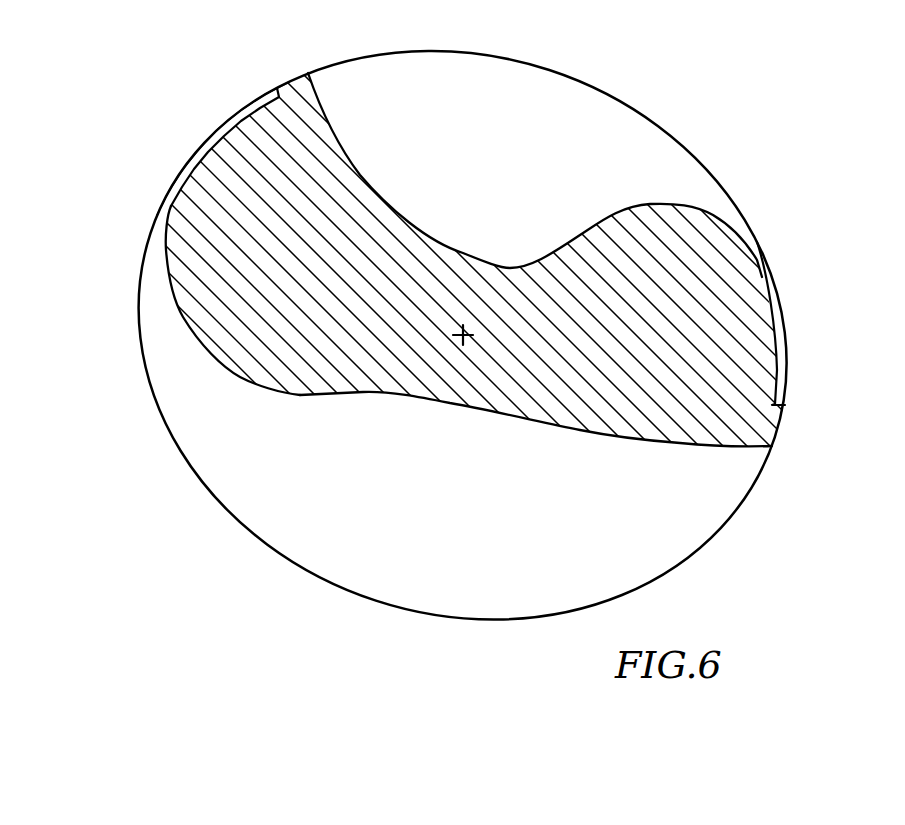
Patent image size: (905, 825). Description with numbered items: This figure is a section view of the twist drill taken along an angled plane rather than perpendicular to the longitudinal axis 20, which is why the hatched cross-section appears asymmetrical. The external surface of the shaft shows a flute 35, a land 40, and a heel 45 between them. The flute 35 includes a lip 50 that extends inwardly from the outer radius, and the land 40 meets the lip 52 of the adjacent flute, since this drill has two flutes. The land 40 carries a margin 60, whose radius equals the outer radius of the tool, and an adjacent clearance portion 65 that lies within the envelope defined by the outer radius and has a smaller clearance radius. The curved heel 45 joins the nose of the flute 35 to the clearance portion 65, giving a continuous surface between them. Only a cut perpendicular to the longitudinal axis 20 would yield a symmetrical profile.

The longitudinal axis 20 is at (468, 340).
The flute 35 is at (421, 434).
The land 40 is at (158, 318).
The heel 45 is at (230, 370).
The lip 50 is at (677, 445).
The lip of adjacent flute 52 is at (338, 138).
The margin 60 is at (292, 80).
The clearance portion 65 is at (167, 215).